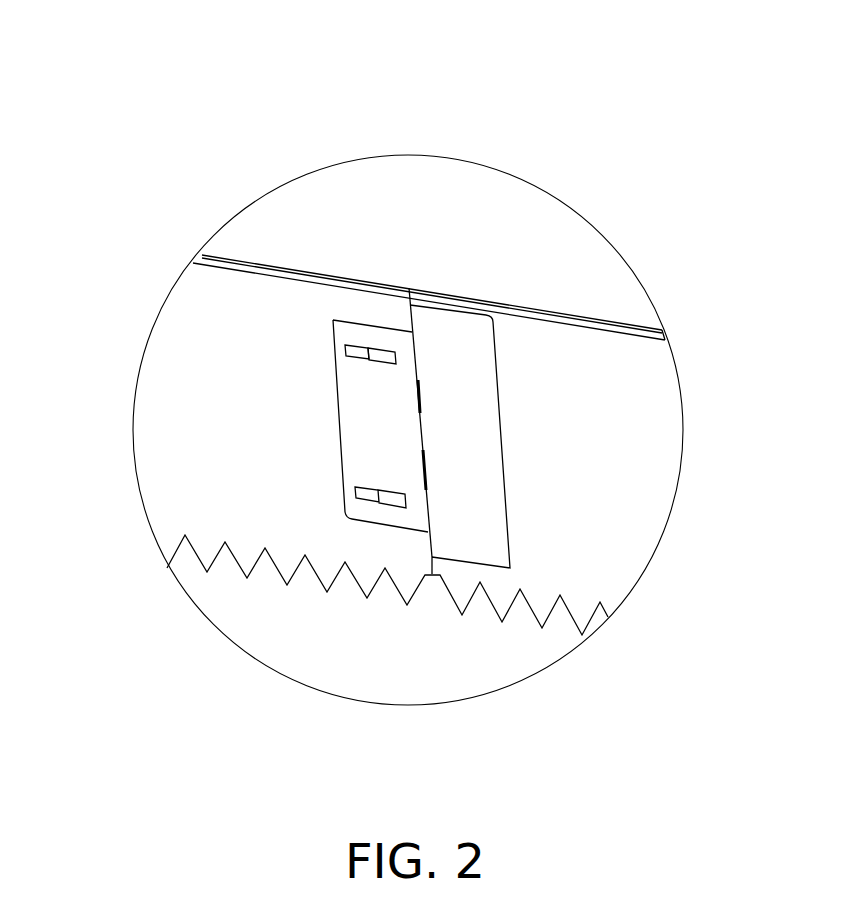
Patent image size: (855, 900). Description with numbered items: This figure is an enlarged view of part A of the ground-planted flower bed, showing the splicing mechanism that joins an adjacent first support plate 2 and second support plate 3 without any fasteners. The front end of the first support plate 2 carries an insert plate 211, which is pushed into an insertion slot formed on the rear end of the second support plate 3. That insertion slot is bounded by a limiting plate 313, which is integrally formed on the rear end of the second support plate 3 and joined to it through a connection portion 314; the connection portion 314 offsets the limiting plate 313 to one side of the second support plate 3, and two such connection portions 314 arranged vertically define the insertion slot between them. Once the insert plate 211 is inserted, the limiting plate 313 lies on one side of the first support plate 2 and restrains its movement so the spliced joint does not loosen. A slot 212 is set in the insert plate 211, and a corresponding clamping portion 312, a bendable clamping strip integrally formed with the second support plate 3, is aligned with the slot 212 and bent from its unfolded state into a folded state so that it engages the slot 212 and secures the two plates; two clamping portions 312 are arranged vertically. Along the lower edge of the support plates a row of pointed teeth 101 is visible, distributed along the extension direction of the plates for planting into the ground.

The part A is at (518, 180).
The first support plate 2 is at (595, 437).
The second support plate 3 is at (217, 407).
The pointed tooth 101 is at (365, 597).
The insert plate 211 is at (363, 448).
The slot 212 is at (385, 352).
The clamping portion 312 is at (353, 350).
The limiting plate 313 is at (450, 475).
The connection portion 314 is at (410, 320).